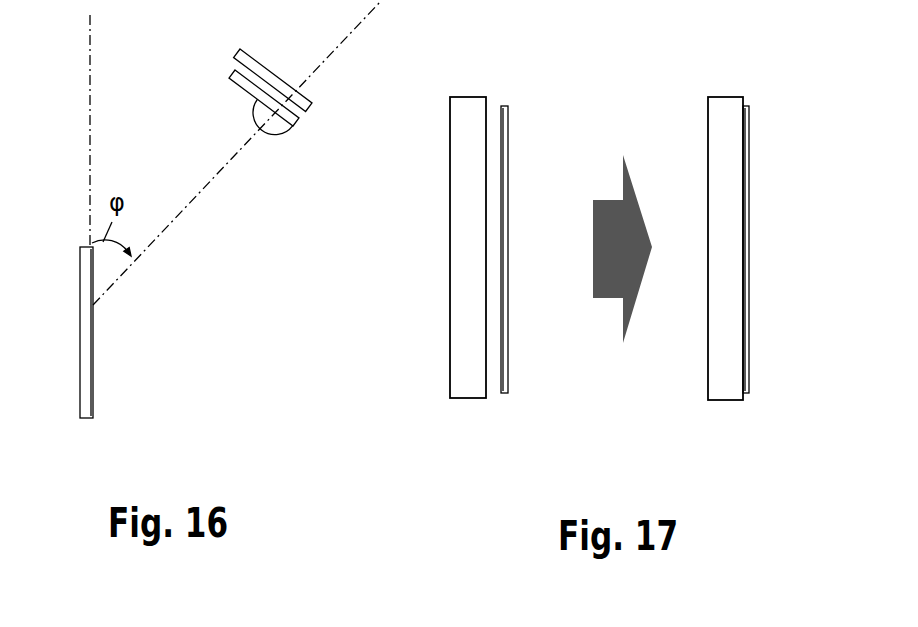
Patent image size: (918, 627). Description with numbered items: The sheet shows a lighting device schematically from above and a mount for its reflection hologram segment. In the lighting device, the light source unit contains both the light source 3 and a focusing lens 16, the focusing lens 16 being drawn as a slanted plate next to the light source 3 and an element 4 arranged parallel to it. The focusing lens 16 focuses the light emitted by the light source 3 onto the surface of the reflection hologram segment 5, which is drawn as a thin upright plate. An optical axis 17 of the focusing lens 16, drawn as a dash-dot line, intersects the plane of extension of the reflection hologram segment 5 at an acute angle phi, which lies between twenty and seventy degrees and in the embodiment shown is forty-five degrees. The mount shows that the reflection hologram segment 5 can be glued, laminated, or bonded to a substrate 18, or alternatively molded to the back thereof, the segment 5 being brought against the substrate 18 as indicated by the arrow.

In FIG. 16, the light source 3 is at (297, 98).
In FIG. 16, the first plate / layer 4 is at (252, 70).
In FIG. 16, the reflection hologram segment 5 is at (80, 370).
In FIG. 17, the reflection hologram segment 5 is at (505, 123).
In FIG. 16, the focusing lens 16 is at (272, 131).
In FIG. 16, the optical axis 17 is at (210, 183).
In FIG. 17, the substrate 18 is at (458, 365).